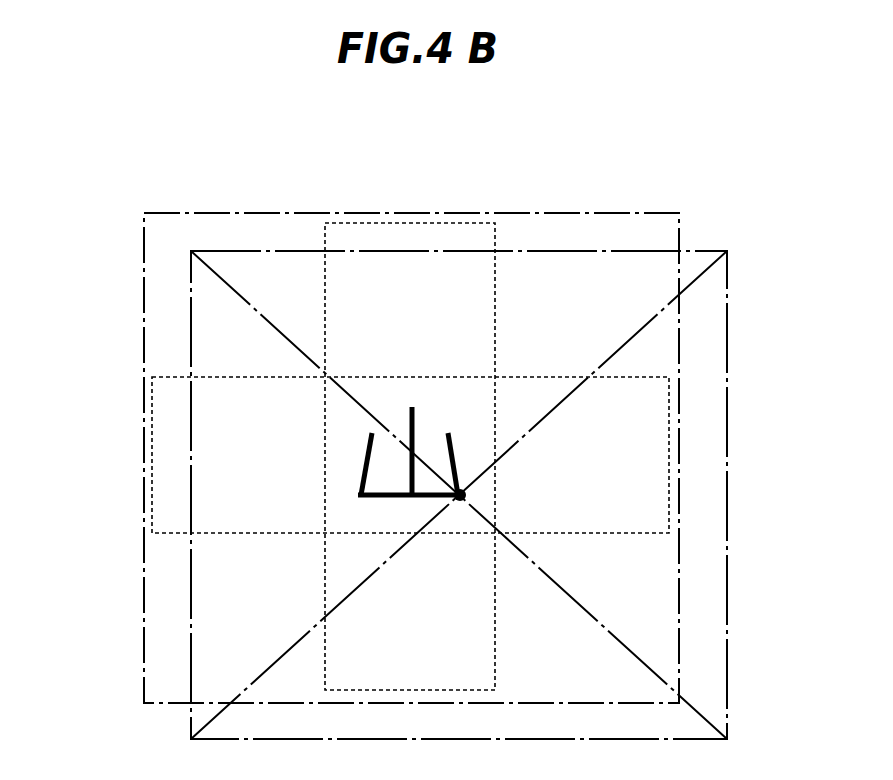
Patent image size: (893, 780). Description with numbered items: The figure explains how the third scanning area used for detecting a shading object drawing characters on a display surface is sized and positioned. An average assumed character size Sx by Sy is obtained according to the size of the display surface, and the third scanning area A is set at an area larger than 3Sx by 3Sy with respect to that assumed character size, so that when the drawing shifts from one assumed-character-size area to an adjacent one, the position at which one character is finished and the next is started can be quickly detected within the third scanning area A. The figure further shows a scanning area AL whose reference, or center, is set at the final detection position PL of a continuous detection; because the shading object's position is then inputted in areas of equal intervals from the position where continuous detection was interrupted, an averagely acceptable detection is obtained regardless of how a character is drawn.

The third scanning area A is at (655, 209).
The scanning area AL is at (706, 250).
The final detection position PL is at (464, 495).
The assumed character size in X direction Sx is at (495, 352).
The assumed character size in Y direction Sy is at (298, 377).
The horizontal extent of third scanning area 3Sx is at (679, 191).
The vertical extent of third scanning area 3Sy is at (121, 213).